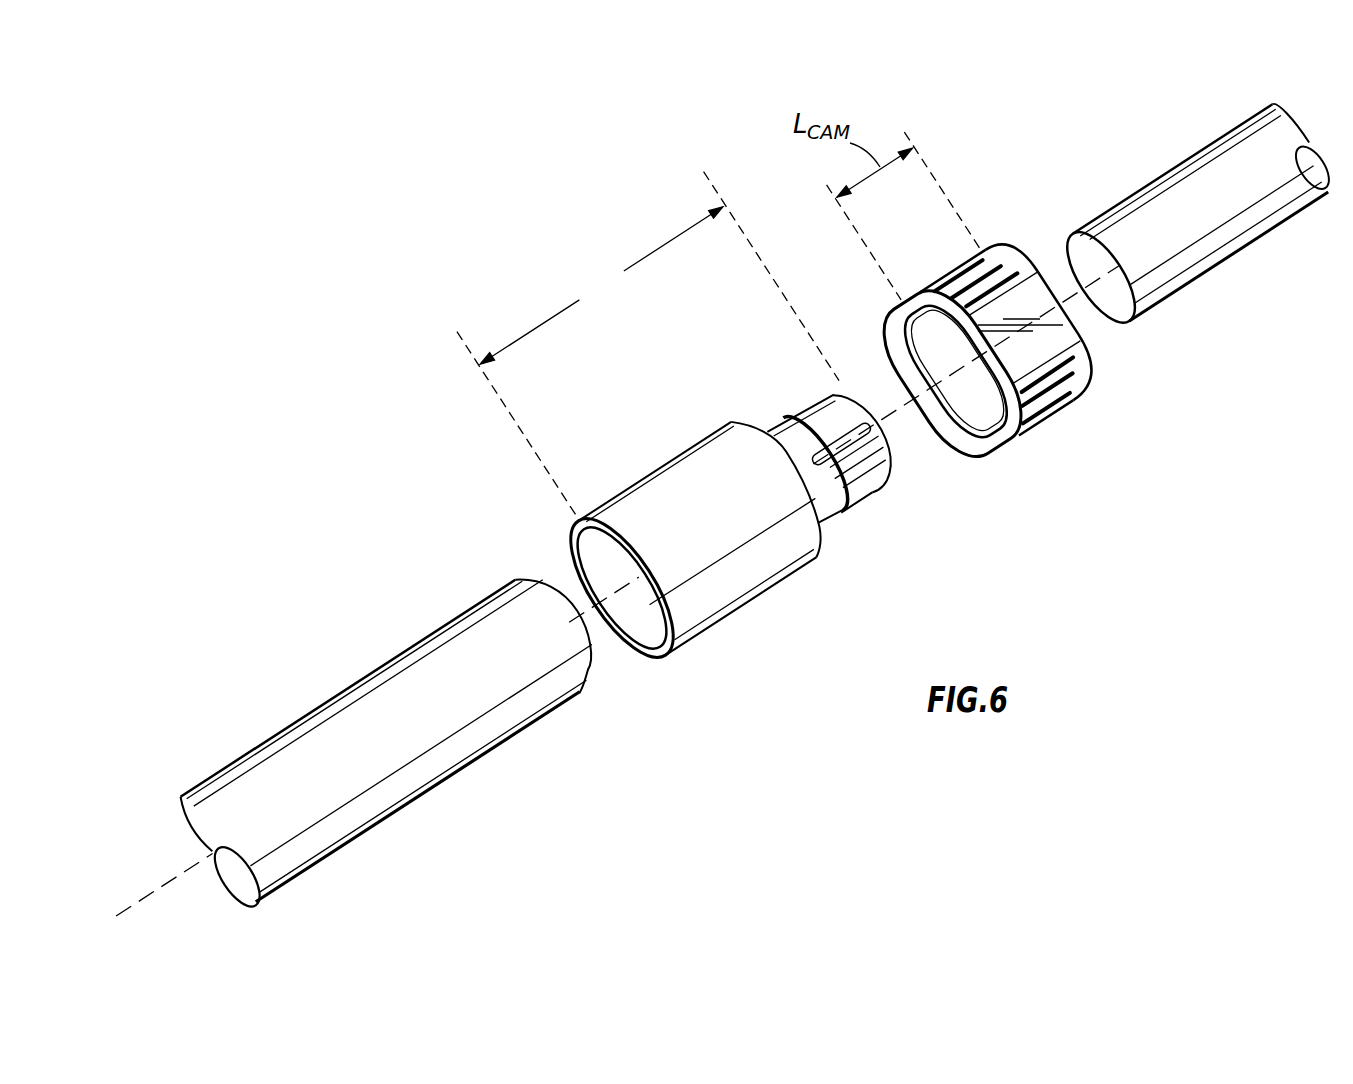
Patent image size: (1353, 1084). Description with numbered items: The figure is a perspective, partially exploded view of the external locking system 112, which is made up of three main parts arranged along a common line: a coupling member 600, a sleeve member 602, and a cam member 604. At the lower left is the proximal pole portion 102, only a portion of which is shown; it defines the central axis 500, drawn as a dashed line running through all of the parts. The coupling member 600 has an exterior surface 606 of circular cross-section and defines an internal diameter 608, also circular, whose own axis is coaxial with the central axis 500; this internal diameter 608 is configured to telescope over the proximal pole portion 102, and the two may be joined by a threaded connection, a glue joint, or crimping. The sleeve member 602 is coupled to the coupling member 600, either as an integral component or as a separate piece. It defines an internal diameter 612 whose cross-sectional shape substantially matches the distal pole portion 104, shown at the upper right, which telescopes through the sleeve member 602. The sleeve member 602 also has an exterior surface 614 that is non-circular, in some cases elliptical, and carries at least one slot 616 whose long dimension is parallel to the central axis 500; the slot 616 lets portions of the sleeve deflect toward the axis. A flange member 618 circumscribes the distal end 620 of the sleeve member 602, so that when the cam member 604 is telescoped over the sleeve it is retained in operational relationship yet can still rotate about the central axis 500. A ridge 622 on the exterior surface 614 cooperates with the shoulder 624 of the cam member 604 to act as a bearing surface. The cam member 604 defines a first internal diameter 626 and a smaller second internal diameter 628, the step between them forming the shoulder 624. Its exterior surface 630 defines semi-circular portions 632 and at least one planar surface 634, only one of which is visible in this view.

The proximal pole portion 102 is at (393, 813).
The distal pole portion 104 is at (1196, 215).
The external locking system 112 is at (675, 211).
The central axis 500 is at (170, 885).
The coupling member 600 is at (804, 520).
The sleeve member 602 is at (706, 527).
The cam member 604 is at (1041, 306).
The exterior surface 606 is at (758, 583).
The internal diameter 608 is at (646, 630).
The internal diameter 612 is at (905, 465).
The exterior surface 614 is at (847, 490).
The slot 616 is at (850, 448).
The flange member 618 is at (813, 395).
The distal end 620 is at (905, 447).
The ridge 622 is at (838, 520).
The shoulder 624 is at (982, 398).
The first internal diameter 626 is at (972, 433).
The second internal diameter 628 is at (1022, 407).
The exterior surface 630 is at (970, 273).
The semi-circular portions 632 is at (1000, 270).
The planar surface 634 is at (1107, 245).